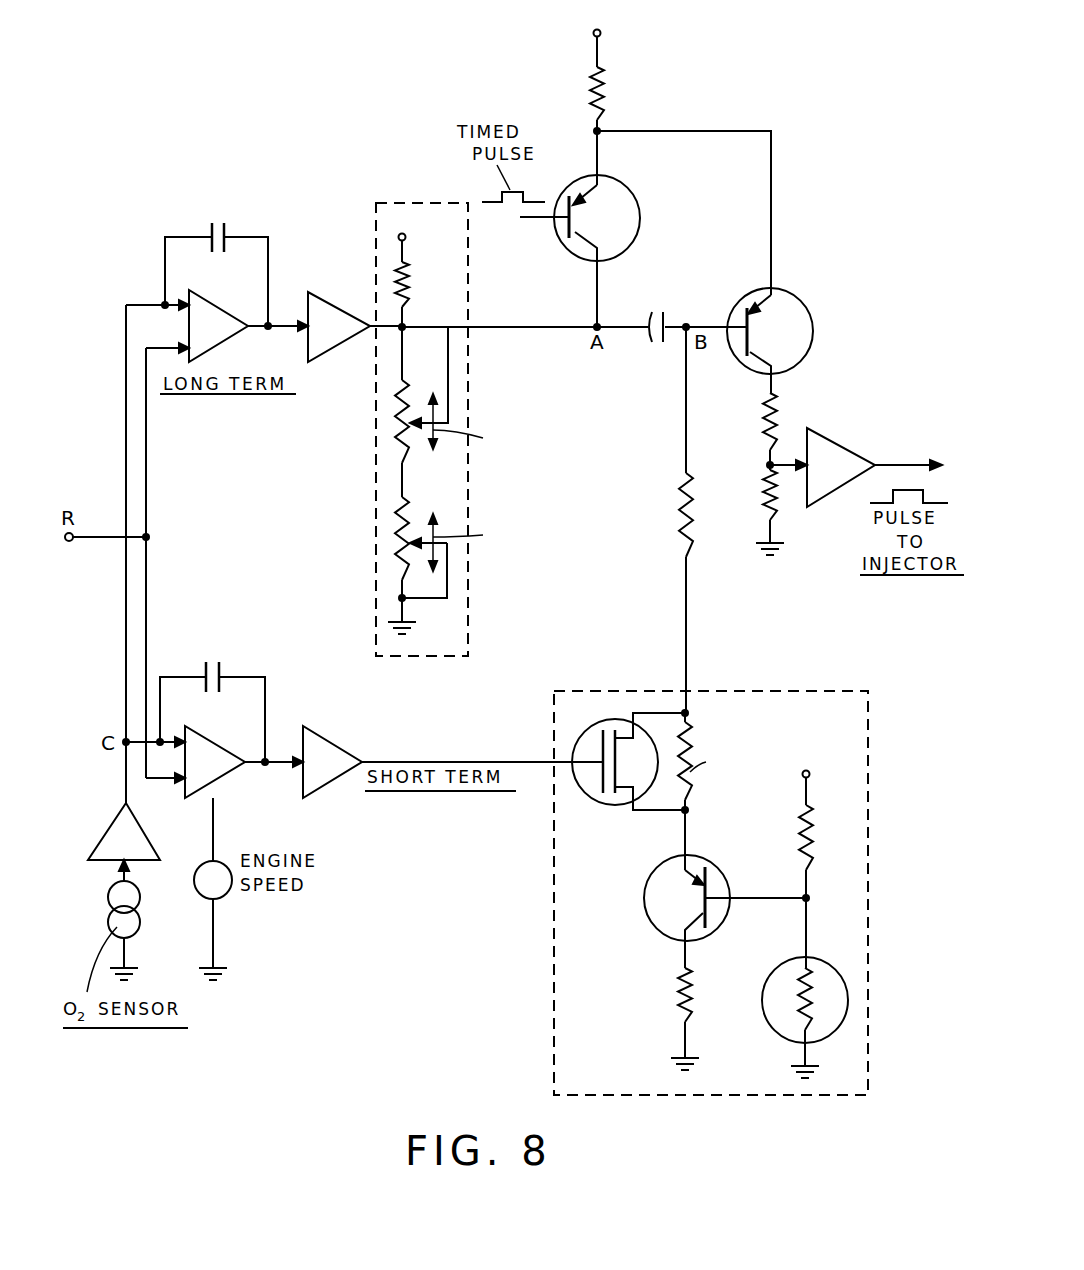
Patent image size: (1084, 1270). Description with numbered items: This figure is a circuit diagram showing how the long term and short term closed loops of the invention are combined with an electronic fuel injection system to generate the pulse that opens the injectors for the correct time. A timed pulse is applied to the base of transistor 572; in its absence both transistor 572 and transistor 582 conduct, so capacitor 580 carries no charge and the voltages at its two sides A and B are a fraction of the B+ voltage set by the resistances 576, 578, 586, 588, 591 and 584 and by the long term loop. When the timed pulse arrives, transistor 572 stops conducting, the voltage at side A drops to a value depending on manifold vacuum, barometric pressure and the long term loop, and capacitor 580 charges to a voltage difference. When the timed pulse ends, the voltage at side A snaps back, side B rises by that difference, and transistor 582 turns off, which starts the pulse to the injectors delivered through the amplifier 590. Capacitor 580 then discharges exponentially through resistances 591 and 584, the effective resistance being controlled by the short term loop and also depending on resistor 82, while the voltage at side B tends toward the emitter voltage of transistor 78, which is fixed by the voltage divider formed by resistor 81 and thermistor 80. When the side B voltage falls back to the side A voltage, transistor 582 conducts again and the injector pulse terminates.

The resistance 576 is at (603, 96).
The transistor 572 is at (627, 186).
The resistance 578 is at (376, 210).
The capacitor 580 is at (662, 305).
The transistor 582 is at (805, 307).
The resistance 584 is at (711, 865).
The resistance 586 is at (762, 422).
The resistance 588 is at (765, 513).
The amplifier 590 is at (834, 442).
The resistance 591 is at (680, 489).
The transistor 78 is at (648, 895).
The thermistor 80 is at (780, 1030).
The resistor 81 is at (800, 833).
The resistor 82 is at (680, 990).